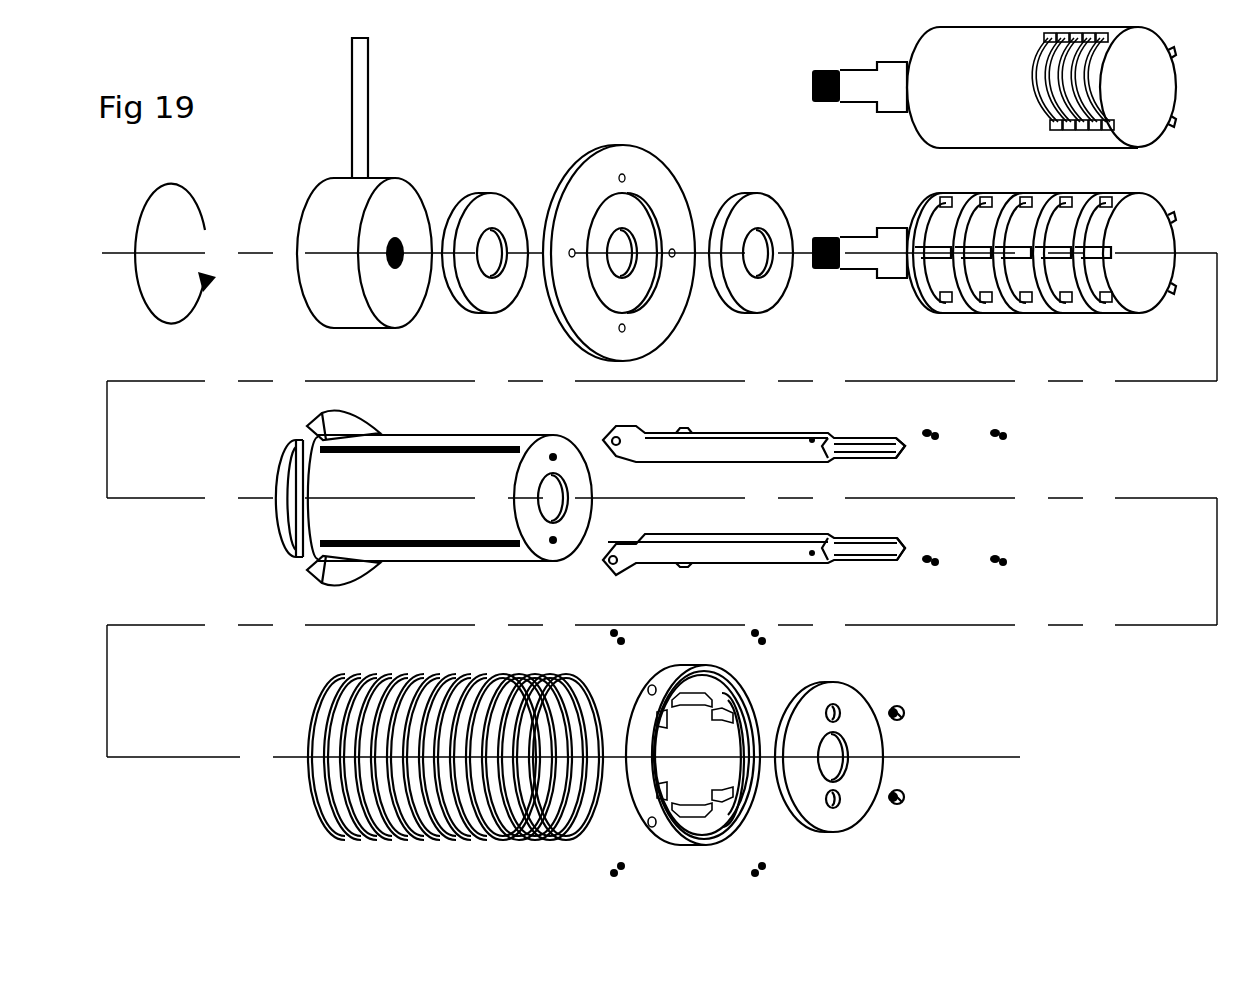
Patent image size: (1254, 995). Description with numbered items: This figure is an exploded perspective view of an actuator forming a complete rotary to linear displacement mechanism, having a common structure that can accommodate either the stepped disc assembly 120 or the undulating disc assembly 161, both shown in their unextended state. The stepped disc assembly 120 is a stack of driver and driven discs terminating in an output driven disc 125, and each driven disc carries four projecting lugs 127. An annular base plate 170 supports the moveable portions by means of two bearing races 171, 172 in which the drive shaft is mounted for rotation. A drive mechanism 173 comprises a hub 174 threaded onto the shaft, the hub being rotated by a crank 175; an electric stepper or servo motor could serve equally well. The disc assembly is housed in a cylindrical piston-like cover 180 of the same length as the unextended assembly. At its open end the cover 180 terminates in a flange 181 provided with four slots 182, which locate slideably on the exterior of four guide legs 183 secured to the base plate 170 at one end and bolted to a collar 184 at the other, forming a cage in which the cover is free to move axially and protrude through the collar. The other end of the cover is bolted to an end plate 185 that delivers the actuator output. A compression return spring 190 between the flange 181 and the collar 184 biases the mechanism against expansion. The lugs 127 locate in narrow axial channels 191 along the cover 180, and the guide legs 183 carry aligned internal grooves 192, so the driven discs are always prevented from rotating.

The stepped disc assembly 120 is at (1029, 263).
The output driven disc 125 is at (1171, 218).
The projecting lugs 127 is at (939, 318).
The undulating disc assembly 161 is at (912, 40).
The annular base plate 170 is at (640, 145).
The bearing race 171 is at (477, 192).
The bearing race 172 is at (744, 190).
The drive mechanism 173 is at (404, 174).
The hub 174 is at (320, 318).
The crank 175 is at (352, 92).
The cylindrical piston-like cover 180 is at (397, 499).
The flange 181 is at (291, 550).
The slots 182 is at (300, 436).
The guide legs 183 is at (712, 431).
The collar 184 is at (752, 697).
The end plate 185 is at (877, 710).
The return spring 190 is at (307, 733).
The narrow channels 191 is at (446, 548).
The internal grooves 192 is at (868, 542).